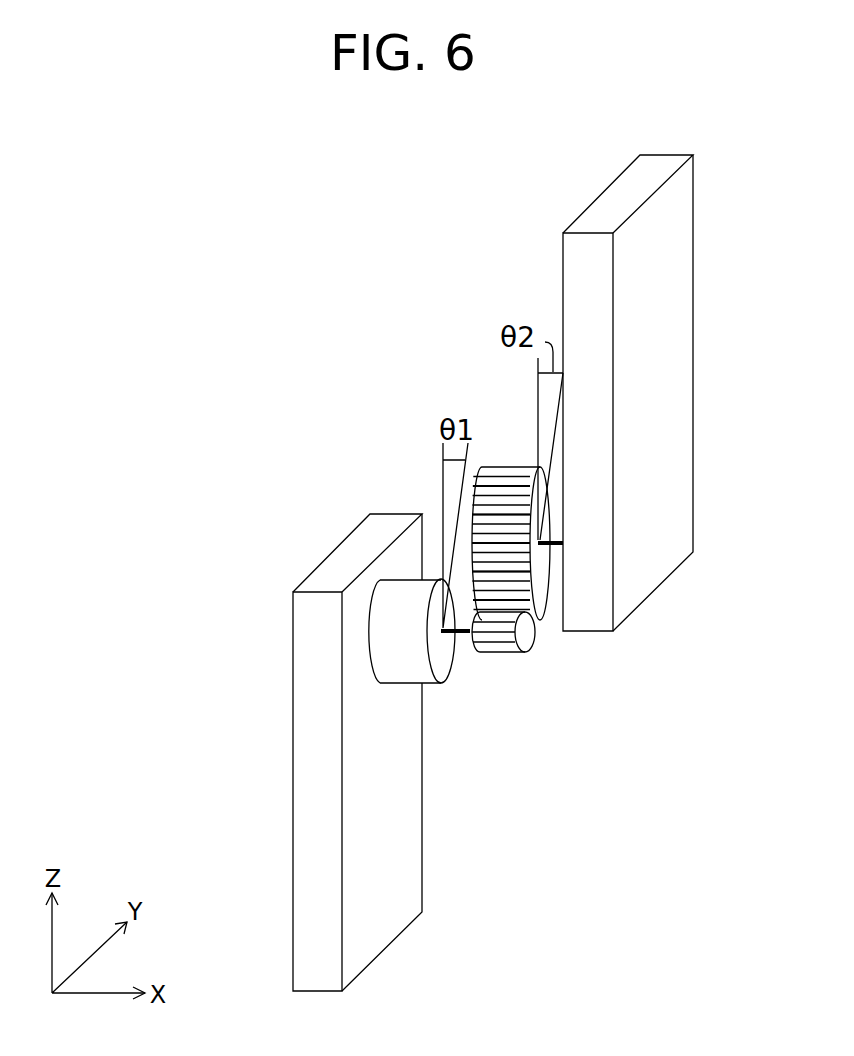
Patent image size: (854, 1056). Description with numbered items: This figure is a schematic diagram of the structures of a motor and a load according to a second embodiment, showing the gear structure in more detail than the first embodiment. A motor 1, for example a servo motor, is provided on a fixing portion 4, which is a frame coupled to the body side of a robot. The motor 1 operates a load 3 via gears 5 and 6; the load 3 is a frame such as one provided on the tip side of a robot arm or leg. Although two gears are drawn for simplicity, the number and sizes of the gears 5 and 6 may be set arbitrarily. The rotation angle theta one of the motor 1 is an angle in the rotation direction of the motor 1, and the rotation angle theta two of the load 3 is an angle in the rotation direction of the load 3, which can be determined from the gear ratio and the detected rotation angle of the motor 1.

The motor 1 is at (395, 597).
The load 3 is at (675, 218).
The fixing portion 4 is at (405, 830).
The gear 5 is at (497, 650).
The gear 6 is at (510, 465).